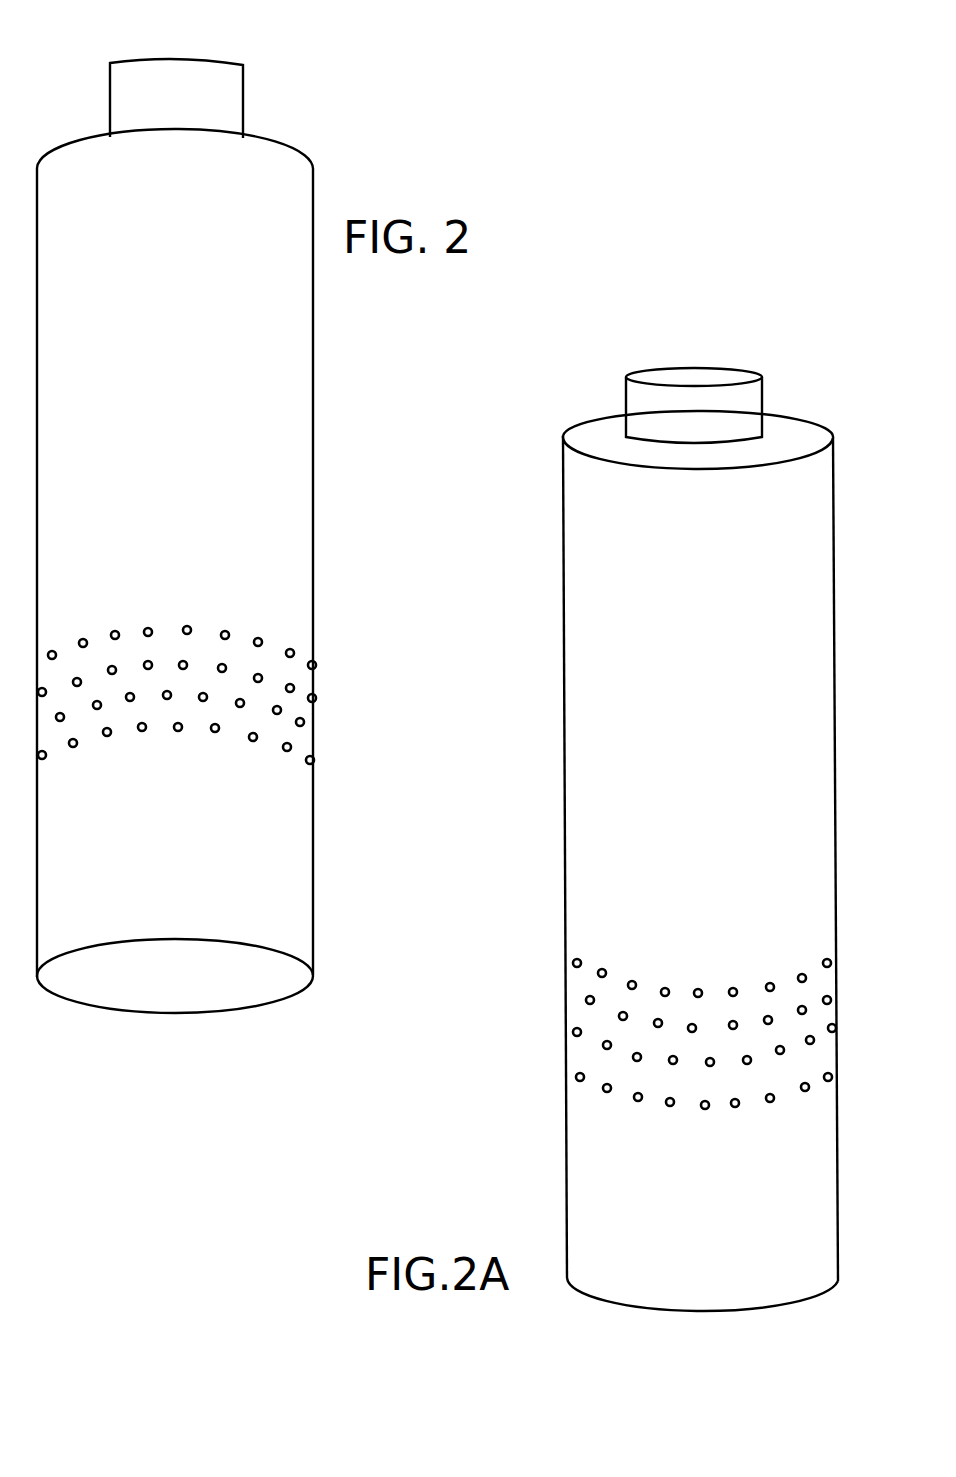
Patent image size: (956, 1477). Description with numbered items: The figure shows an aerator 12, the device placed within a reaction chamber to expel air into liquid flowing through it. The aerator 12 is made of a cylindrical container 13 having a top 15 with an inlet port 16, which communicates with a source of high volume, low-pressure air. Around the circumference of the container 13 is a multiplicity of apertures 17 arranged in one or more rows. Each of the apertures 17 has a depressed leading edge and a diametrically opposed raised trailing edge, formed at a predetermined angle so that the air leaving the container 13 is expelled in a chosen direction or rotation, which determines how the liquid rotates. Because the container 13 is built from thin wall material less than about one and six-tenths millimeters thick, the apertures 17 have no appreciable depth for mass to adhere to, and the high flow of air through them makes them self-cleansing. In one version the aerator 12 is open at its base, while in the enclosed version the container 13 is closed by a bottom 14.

In FIG. 2, the aerator 12 is at (211, 511).
In FIG. 2A, the aerator 12 is at (678, 837).
In FIG. 2, the cylindrical container 13 is at (315, 487).
In FIG. 2A, the cylindrical container 13 is at (565, 776).
In FIG. 2A, the bottom 14 is at (777, 1305).
In FIG. 2, the top 15 is at (300, 158).
In FIG. 2A, the top 15 is at (808, 422).
In FIG. 2, the inlet port 16 is at (178, 58).
In FIG. 2A, the inlet port 16 is at (715, 377).
In FIG. 2, the apertures 17 is at (303, 690).
In FIG. 2A, the apertures 17 is at (575, 997).